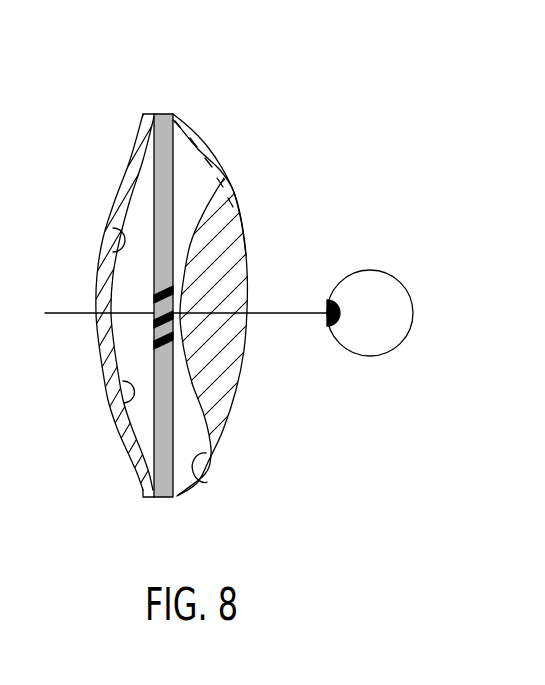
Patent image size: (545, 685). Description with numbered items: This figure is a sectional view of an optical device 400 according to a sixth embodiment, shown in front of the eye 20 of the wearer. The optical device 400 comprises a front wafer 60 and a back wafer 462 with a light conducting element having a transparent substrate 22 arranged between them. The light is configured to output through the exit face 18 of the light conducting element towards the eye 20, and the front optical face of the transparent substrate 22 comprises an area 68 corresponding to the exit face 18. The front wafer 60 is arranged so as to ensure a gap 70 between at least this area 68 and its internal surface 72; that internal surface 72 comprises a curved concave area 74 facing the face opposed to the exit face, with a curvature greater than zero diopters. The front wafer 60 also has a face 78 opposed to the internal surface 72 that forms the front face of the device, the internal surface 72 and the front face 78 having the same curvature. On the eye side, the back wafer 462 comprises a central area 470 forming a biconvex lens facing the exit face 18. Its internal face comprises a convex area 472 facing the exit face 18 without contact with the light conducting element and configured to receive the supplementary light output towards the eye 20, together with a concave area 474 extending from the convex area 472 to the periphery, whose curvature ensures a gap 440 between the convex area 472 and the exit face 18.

The optical device 400 is at (225, 123).
The transparent substrate 22 is at (162, 128).
The front wafer 60 is at (123, 177).
The internal surface 72 is at (113, 228).
The gap 70 is at (148, 285).
The area corresponding to the exit face 68 is at (155, 305).
The front face 78 is at (103, 372).
The concave area 74 is at (125, 408).
The back wafer 462 is at (222, 182).
The gap 440 is at (214, 195).
The central area 470 is at (218, 275).
The convex area 472 is at (193, 390).
The concave area 474 is at (197, 480).
The exit face 18 is at (173, 316).
The eye 20 is at (375, 335).